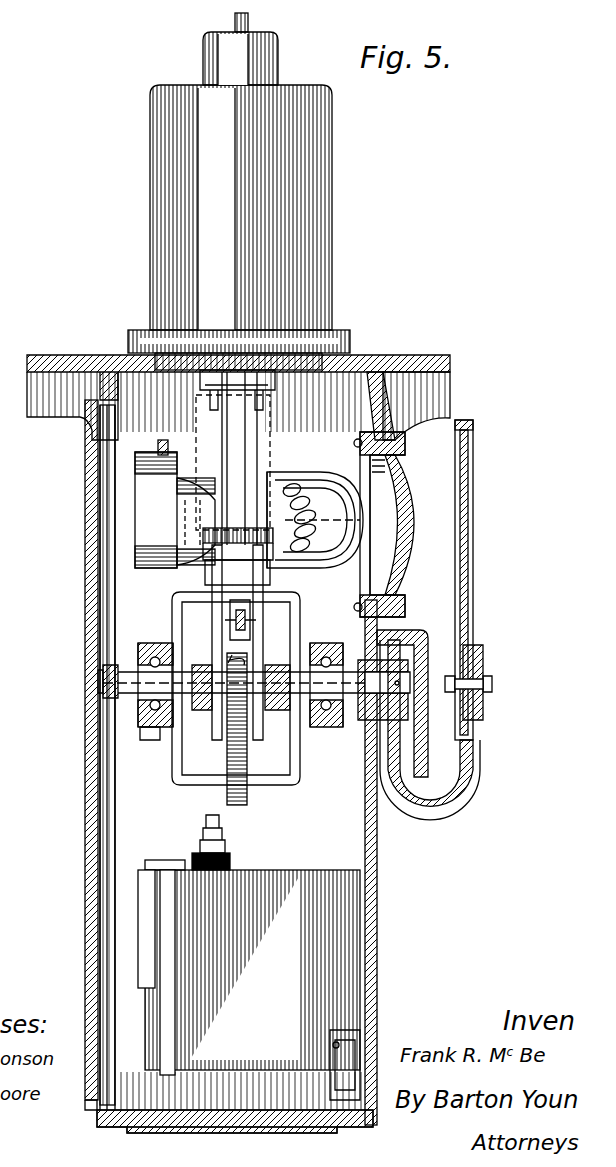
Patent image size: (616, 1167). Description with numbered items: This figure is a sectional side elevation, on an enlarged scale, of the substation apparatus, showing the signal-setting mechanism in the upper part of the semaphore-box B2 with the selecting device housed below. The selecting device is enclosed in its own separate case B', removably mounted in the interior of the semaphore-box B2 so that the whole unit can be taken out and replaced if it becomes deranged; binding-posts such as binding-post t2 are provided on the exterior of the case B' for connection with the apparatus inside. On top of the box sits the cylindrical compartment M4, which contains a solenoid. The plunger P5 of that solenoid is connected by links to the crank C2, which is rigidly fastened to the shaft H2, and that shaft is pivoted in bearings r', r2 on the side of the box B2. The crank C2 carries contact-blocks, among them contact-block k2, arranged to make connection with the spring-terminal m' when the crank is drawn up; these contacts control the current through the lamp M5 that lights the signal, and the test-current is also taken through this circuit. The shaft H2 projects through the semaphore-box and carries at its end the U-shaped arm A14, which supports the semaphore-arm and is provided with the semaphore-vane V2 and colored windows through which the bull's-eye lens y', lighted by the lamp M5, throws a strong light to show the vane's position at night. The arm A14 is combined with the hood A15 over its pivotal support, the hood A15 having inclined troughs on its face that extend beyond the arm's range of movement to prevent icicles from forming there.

The cylindrical compartment M4 is at (239, 191).
The plunger P5 is at (228, 448).
The lamp M5 is at (290, 472).
The bull's-eye lens y' is at (384, 524).
The shaft H2 is at (165, 650).
The spring-terminal m' is at (220, 620).
The contact-block k2 is at (275, 628).
The semaphore-box B2 is at (85, 677).
The bearing r' is at (144, 748).
The bearing r2 is at (330, 727).
The crank C2 is at (247, 790).
The binding-post t2 is at (226, 835).
The case B' is at (249, 980).
The semaphore-vane V2 is at (480, 650).
The hood A15 is at (432, 625).
The arm A14 is at (468, 780).